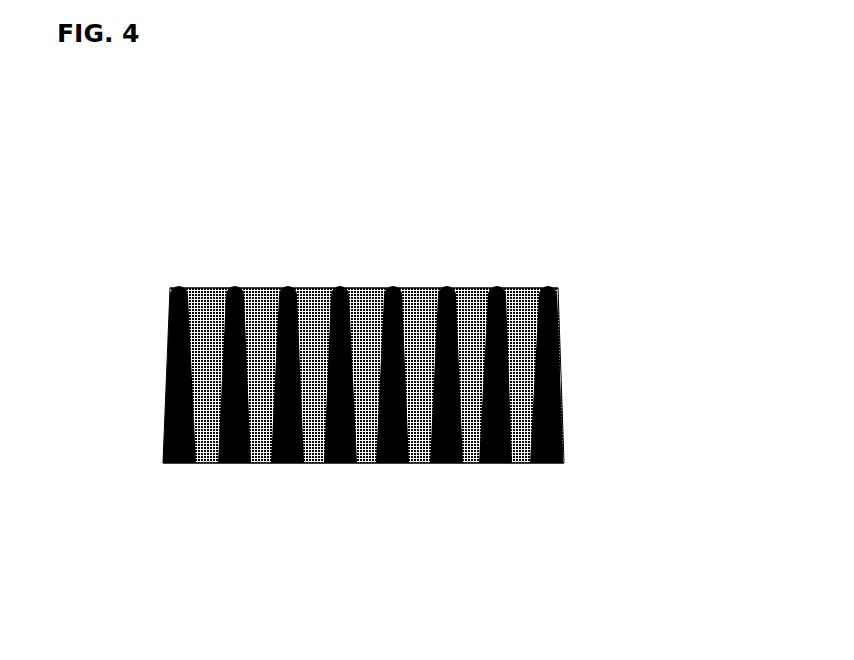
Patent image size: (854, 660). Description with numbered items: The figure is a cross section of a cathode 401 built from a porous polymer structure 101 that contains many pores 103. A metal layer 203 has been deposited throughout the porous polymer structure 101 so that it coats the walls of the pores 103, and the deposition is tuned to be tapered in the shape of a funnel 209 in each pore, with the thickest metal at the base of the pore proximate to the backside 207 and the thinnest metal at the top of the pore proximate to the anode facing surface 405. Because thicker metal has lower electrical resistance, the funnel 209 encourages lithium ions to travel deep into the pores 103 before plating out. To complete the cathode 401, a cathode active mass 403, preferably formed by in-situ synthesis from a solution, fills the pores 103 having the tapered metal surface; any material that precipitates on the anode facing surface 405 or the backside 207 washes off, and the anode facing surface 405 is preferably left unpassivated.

The porous polymer structure 101 is at (335, 287).
The pores 103 is at (415, 288).
The metal layer 203 is at (558, 290).
The backside 207 is at (174, 489).
The funnel 209 is at (210, 287).
The cathode 401 is at (673, 207).
The cathode active mass 403 is at (473, 288).
The anode facing surface 405 is at (170, 270).